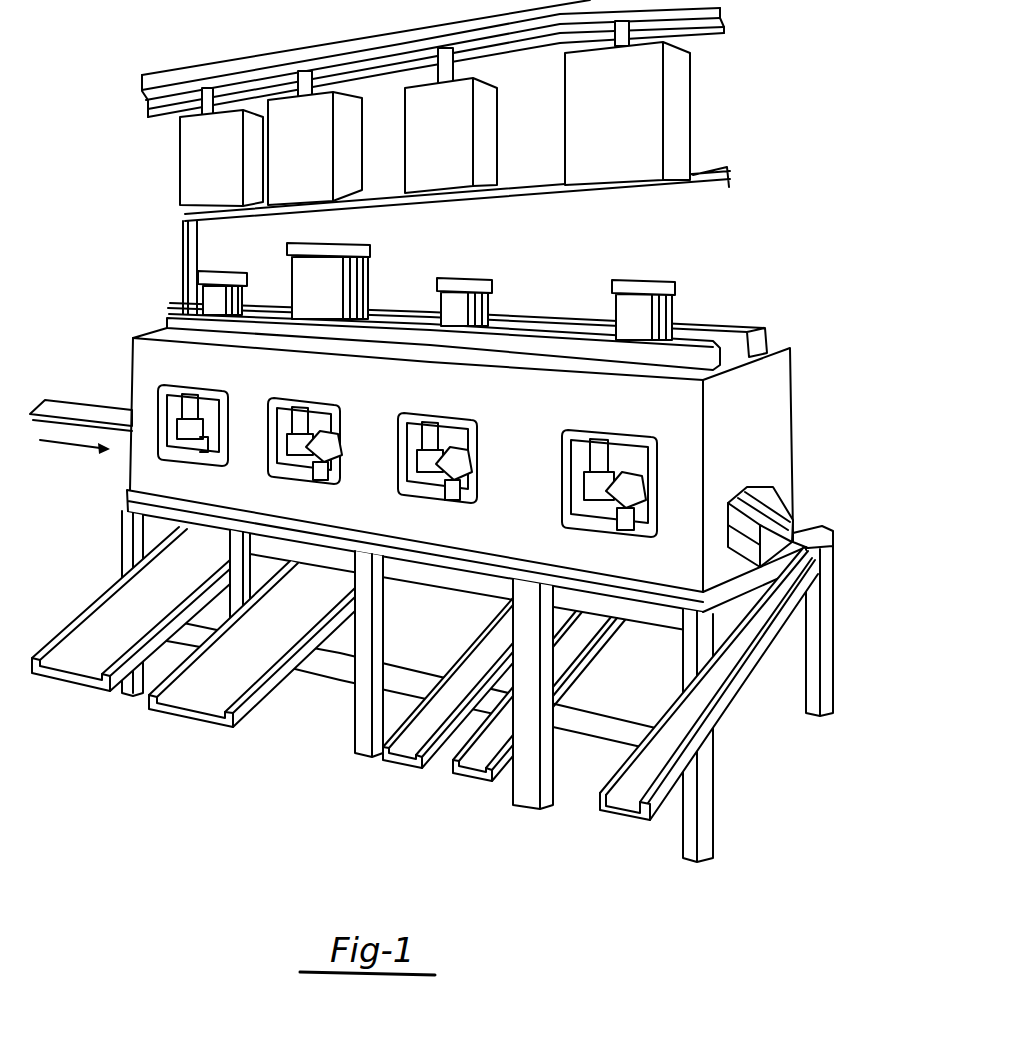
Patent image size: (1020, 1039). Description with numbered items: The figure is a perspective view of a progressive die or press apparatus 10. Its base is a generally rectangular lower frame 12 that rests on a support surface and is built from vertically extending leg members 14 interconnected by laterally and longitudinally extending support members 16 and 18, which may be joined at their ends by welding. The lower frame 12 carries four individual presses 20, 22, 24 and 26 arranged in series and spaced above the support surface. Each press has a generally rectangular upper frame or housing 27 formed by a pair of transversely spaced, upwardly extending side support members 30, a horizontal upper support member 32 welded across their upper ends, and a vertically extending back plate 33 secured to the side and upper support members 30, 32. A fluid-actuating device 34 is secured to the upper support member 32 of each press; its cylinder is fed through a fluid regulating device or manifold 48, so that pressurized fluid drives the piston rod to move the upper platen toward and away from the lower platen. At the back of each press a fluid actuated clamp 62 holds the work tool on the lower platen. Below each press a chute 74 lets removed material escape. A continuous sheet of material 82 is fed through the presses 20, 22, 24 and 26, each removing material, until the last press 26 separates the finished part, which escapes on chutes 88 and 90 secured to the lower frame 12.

The apparatus 10 is at (91, 198).
The lower frame 12 is at (840, 624).
The leg members 14 is at (834, 680).
The support members 16 is at (807, 553).
The support members 18 is at (580, 727).
The press 20 is at (216, 396).
The press 22 is at (338, 429).
The press 24 is at (478, 463).
The press 26 is at (658, 469).
The upper frame 27 is at (502, 460).
The side support members 30 is at (758, 452).
The upper support member 32 is at (737, 357).
The back plate 33 is at (524, 500).
The fluid-actuating device 34 is at (246, 299).
The fluid regulating device 48 is at (200, 167).
The fluid actuated clamp 62 is at (214, 447).
The chute 74 is at (200, 688).
The sheet of material 82 is at (78, 400).
The chute 88 is at (780, 512).
The chute 90 is at (720, 698).